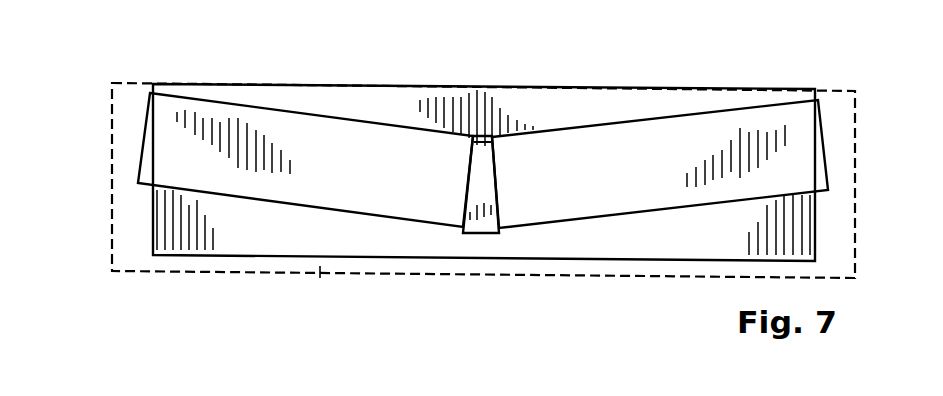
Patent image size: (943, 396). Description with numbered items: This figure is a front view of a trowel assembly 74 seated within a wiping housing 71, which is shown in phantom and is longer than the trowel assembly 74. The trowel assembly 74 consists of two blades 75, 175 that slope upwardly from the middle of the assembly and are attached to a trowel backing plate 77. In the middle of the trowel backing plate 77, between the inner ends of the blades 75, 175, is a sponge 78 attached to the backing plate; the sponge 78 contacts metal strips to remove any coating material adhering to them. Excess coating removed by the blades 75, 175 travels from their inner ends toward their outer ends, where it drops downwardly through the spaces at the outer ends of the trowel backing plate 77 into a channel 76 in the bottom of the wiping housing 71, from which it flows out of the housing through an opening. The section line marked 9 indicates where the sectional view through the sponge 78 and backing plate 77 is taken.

The wiping housing 71 is at (112, 178).
The trowel assembly 74 is at (330, 45).
The blade 75 is at (368, 185).
The blade 175 is at (655, 187).
The channel 76 is at (318, 274).
The trowel backing plate 77 is at (388, 108).
The sponge 78 is at (479, 186).
The section line 9- 9 is at (482, 60).